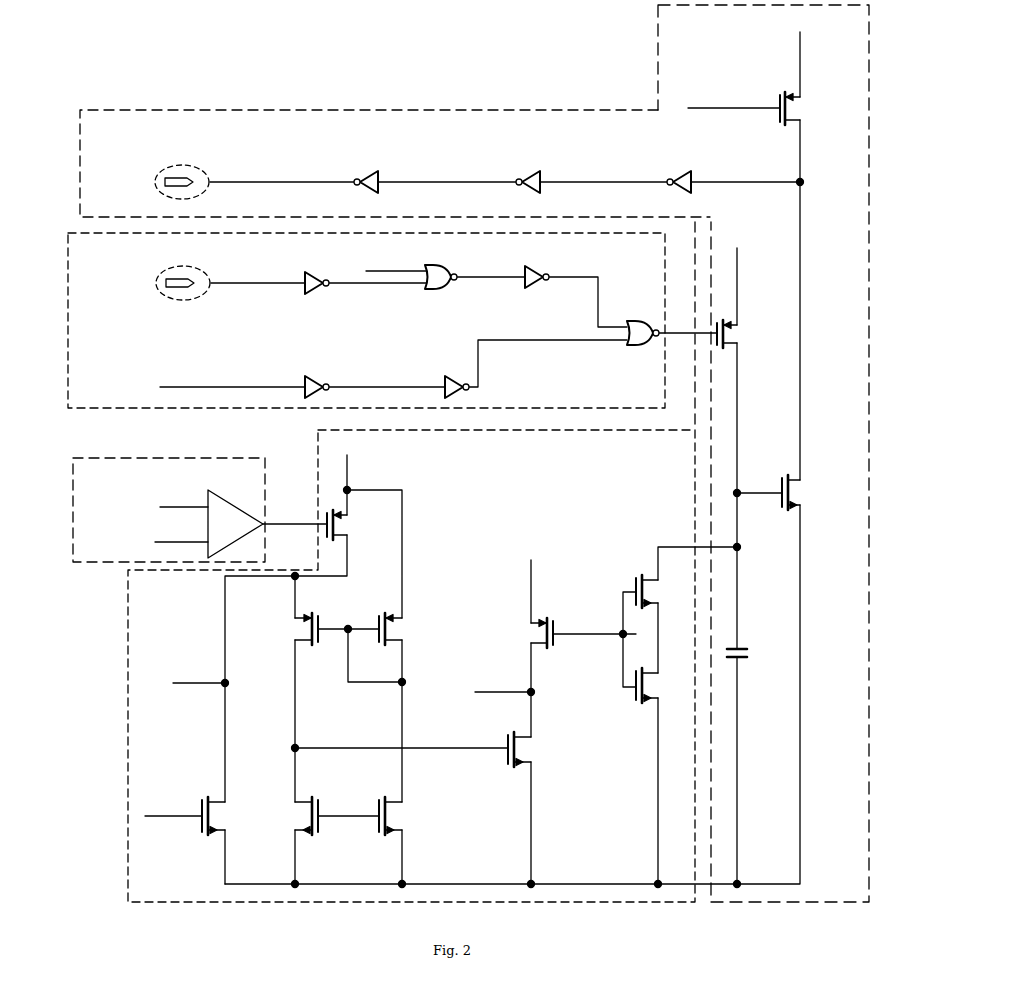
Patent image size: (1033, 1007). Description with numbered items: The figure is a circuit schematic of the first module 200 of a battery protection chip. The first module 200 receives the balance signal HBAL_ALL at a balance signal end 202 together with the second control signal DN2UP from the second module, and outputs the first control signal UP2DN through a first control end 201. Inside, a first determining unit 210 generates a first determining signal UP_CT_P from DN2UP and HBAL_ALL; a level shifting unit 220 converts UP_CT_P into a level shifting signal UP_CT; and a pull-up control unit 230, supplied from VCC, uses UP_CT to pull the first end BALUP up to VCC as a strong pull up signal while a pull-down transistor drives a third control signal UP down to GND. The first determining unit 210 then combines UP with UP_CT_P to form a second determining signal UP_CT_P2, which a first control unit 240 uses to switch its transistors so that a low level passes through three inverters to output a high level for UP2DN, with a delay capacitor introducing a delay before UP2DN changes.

The first module 200 is at (149, 34).
The first control end 201 is at (186, 175).
The balance signal end 202 is at (184, 276).
The first determining unit 210 is at (63, 224).
The level shifting unit 220 is at (128, 458).
The pull-up control unit 230 is at (432, 666).
The first control unit 240 is at (400, 109).